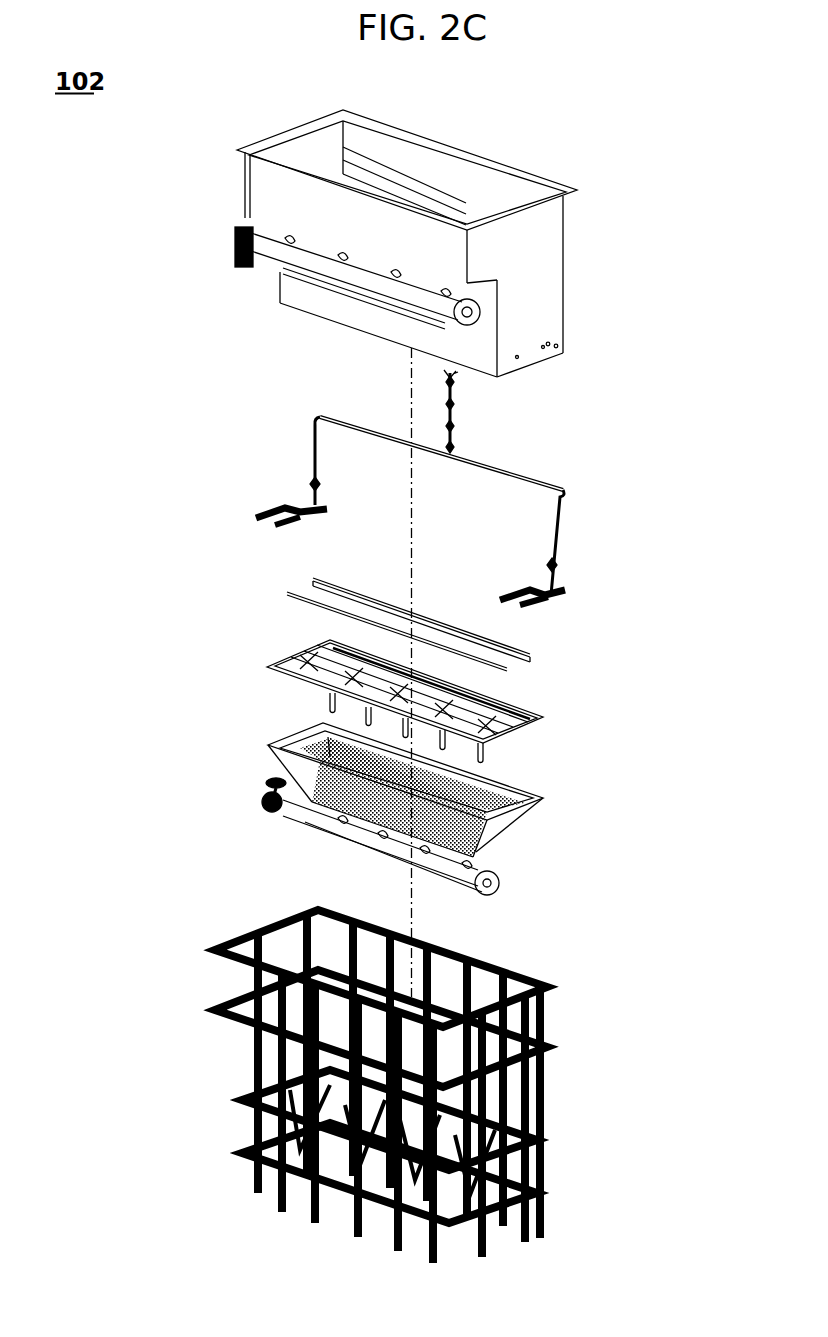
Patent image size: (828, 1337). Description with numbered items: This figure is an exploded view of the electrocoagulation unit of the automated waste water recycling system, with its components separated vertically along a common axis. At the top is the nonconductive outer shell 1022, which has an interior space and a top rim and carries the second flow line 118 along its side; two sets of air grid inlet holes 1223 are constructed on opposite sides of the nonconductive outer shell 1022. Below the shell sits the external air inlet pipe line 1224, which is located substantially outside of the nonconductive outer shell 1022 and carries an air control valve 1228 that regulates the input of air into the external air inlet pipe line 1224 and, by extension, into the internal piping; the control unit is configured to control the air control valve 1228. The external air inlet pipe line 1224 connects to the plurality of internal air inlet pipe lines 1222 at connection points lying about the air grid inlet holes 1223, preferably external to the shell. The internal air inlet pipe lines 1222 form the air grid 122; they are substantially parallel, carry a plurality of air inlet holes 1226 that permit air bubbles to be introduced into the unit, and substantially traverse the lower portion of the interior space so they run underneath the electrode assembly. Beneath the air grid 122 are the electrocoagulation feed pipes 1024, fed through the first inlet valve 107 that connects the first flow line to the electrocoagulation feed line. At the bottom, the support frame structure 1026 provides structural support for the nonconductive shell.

The second flow line 118 is at (237, 231).
The nonconductive outer shell 1022 is at (553, 278).
The air grid inlet holes 1223 is at (563, 343).
The air control valve 1228 is at (468, 387).
The external air inlet pipe line 1224 is at (563, 488).
The air inlet holes 1226 is at (300, 587).
The internal air inlet pipe lines 1222 is at (532, 658).
The air grid 122 is at (527, 667).
The first inlet valve 107 is at (262, 797).
The electrocoagulation feed pipes 1024 is at (470, 858).
The support frame structure 1026 is at (547, 983).